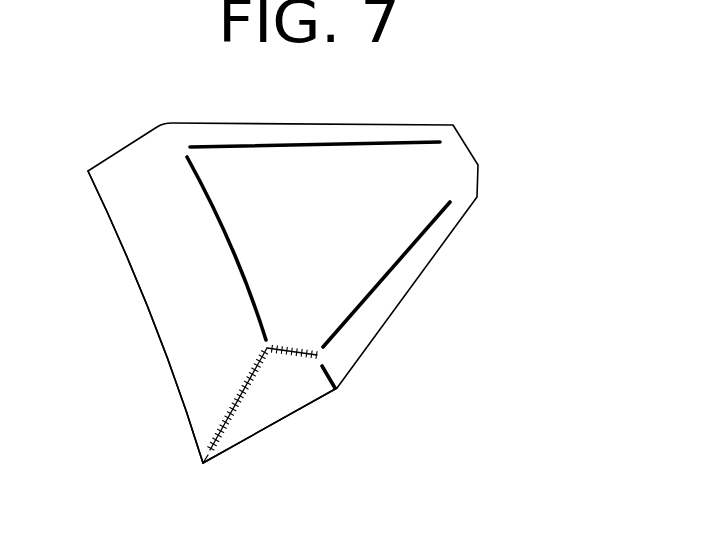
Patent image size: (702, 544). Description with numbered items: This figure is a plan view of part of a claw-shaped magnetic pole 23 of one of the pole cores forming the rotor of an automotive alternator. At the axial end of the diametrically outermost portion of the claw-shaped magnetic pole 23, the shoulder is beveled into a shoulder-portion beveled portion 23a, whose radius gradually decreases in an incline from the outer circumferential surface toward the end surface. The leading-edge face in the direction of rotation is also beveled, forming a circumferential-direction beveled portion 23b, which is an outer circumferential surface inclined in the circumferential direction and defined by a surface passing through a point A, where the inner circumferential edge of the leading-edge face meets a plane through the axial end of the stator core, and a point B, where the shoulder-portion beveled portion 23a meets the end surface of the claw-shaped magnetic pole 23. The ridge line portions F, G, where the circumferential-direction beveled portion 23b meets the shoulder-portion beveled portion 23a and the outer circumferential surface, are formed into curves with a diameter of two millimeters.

The claw-shaped magnetic pole 23 is at (483, 177).
The shoulder-portion beveled portion 23a is at (177, 265).
The circumferential-direction beveled portion 23b is at (277, 402).
The ridge line portion F is at (241, 388).
The ridge line portion G is at (293, 348).
The point A is at (338, 390).
The point B is at (202, 476).